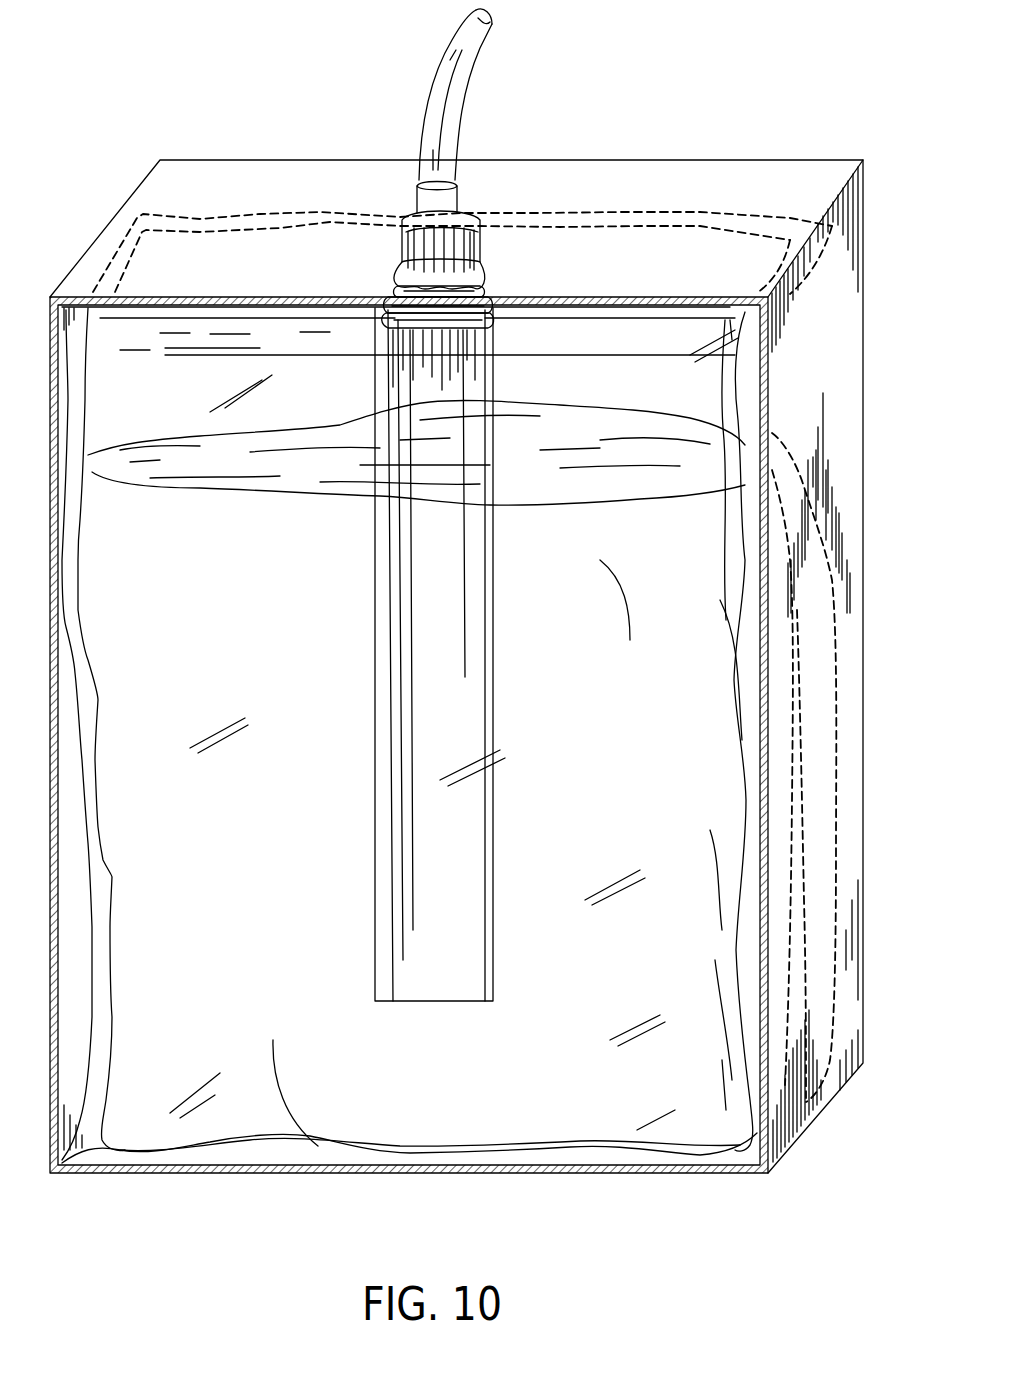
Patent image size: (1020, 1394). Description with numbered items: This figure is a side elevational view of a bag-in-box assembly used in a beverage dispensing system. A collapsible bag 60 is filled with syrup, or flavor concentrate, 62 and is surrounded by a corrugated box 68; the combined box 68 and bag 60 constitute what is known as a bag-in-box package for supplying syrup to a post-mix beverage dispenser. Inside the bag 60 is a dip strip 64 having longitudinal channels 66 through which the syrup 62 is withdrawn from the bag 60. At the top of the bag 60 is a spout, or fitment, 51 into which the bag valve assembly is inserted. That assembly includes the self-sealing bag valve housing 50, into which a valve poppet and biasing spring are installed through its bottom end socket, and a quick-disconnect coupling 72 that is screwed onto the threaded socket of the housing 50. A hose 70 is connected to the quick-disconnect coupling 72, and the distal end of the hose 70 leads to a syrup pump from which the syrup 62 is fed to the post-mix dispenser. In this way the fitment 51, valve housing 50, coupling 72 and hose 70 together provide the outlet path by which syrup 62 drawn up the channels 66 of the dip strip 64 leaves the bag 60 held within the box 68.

The self-sealing bag valve housing 50 is at (478, 290).
The spout or fitment 51 is at (395, 333).
The collapsible bag 60 is at (695, 755).
The syrup or flavor concentrate 62 is at (710, 578).
The dip strip 64 is at (477, 932).
The longitudinal channels 66 is at (398, 555).
The corrugated box 68 is at (838, 897).
The hose 70 is at (440, 108).
The quick-disconnect coupling 72 is at (418, 250).